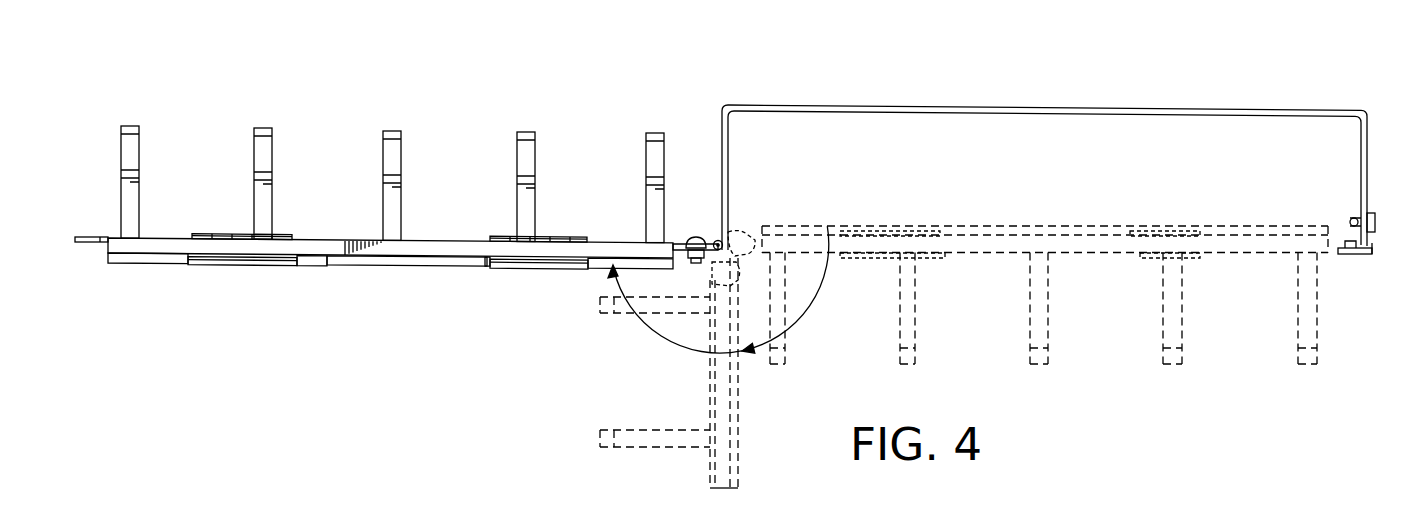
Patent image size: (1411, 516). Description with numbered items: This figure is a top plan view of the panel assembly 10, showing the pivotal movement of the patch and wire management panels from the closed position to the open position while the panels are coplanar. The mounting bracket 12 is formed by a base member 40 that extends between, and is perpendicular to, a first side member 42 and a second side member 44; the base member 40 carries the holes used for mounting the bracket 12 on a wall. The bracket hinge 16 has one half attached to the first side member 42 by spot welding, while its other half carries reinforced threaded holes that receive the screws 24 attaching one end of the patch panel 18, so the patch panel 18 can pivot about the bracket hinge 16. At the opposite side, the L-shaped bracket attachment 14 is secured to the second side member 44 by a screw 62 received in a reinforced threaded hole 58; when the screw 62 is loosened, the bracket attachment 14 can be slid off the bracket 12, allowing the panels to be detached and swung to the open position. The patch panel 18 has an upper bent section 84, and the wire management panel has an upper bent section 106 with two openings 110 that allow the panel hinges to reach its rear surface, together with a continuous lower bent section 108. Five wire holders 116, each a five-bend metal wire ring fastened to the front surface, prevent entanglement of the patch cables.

The panel assembly 10 is at (493, 346).
The mounting bracket 12 is at (820, 100).
The bracket attachment 14 is at (1372, 255).
The bracket hinge 16 is at (719, 235).
The patch panel 18 is at (330, 258).
The screws 24 is at (697, 236).
The base member 40 is at (1147, 105).
The first side member 42 is at (733, 140).
The second side member 44 is at (1362, 152).
The reinforced threaded hole 58 is at (1352, 221).
The screw 62 is at (1373, 216).
The upper bent section 84 is at (152, 258).
The upper bent section 106 is at (385, 263).
The lower bent section 108 is at (232, 262).
The openings 110 is at (292, 262).
The wire holders 116 is at (517, 160).